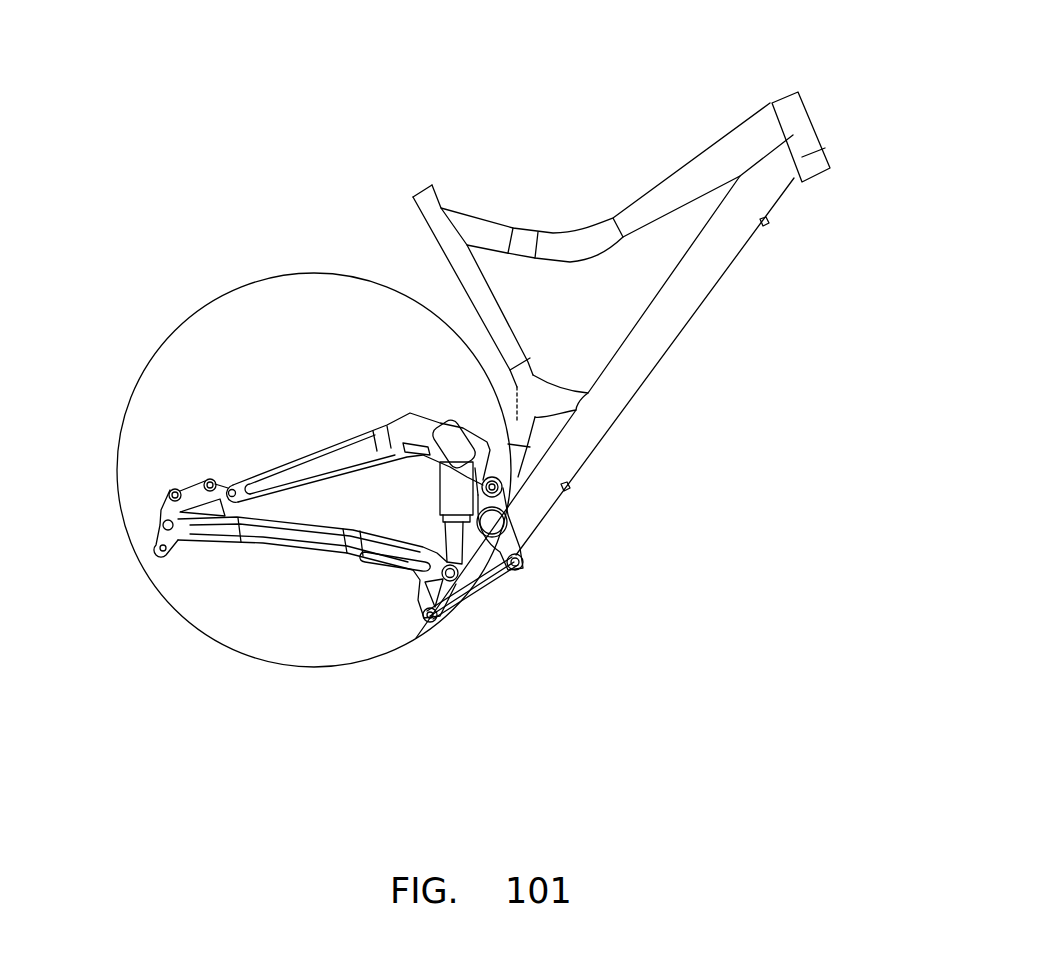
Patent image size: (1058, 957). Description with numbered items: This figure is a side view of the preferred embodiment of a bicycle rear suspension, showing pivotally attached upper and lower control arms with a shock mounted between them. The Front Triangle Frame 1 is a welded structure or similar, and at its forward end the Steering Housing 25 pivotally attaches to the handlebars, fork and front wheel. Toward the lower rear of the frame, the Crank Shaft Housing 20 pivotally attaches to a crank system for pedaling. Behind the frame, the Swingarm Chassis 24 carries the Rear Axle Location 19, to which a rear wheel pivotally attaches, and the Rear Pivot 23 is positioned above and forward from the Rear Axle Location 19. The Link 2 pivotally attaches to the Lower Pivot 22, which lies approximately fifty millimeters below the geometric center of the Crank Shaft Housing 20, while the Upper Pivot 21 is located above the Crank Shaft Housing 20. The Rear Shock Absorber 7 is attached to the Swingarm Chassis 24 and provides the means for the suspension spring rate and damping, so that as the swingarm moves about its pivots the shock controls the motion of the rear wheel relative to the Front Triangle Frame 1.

The Front Triangle Frame 1 is at (621, 344).
The Link 2 is at (502, 591).
The Rear Shock Absorber 7 is at (421, 494).
The Rear Axle Location 19 is at (165, 518).
The Crank Shaft Housing 20 is at (509, 528).
The Upper Pivot 21 is at (503, 486).
The Lower Pivot 22 is at (525, 565).
The Rear Pivot 23 is at (229, 489).
The Swingarm Chassis 24 is at (158, 602).
The Steering Housing 25 is at (783, 95).